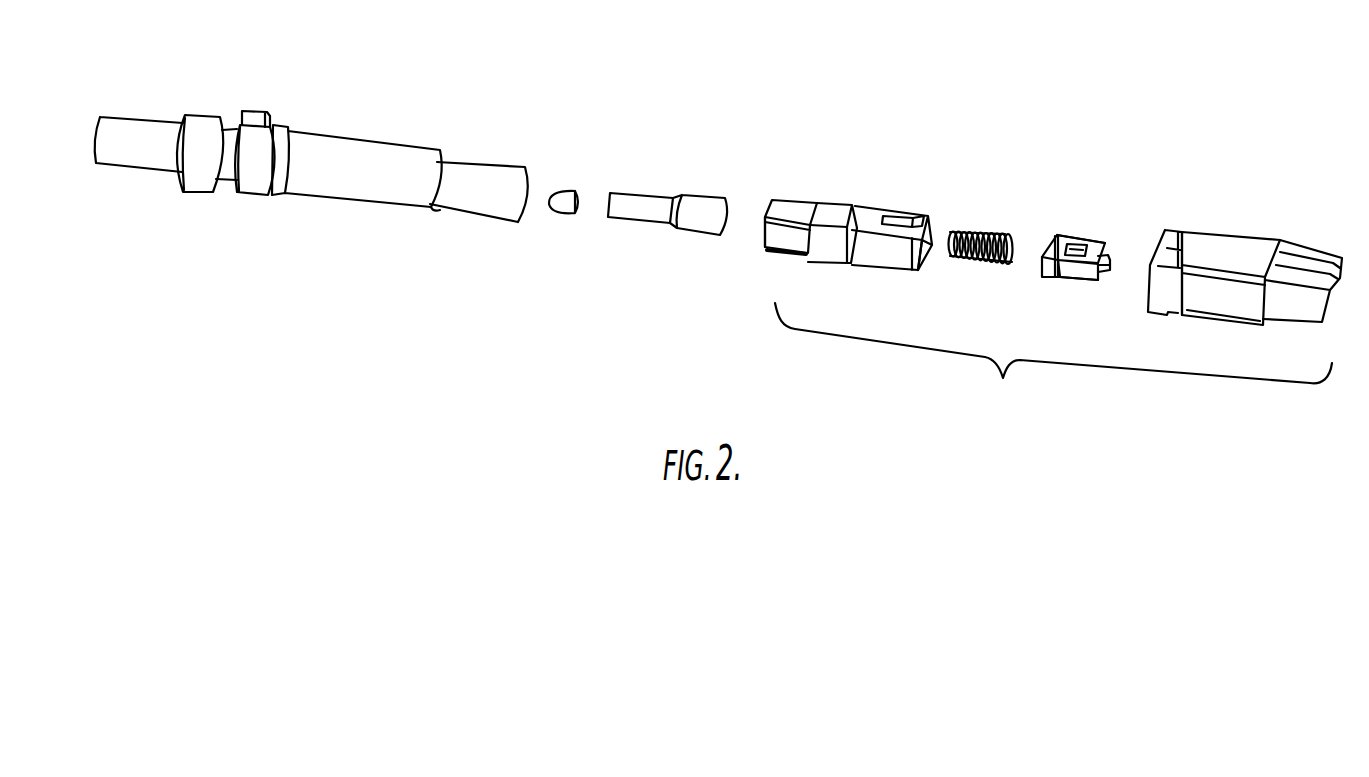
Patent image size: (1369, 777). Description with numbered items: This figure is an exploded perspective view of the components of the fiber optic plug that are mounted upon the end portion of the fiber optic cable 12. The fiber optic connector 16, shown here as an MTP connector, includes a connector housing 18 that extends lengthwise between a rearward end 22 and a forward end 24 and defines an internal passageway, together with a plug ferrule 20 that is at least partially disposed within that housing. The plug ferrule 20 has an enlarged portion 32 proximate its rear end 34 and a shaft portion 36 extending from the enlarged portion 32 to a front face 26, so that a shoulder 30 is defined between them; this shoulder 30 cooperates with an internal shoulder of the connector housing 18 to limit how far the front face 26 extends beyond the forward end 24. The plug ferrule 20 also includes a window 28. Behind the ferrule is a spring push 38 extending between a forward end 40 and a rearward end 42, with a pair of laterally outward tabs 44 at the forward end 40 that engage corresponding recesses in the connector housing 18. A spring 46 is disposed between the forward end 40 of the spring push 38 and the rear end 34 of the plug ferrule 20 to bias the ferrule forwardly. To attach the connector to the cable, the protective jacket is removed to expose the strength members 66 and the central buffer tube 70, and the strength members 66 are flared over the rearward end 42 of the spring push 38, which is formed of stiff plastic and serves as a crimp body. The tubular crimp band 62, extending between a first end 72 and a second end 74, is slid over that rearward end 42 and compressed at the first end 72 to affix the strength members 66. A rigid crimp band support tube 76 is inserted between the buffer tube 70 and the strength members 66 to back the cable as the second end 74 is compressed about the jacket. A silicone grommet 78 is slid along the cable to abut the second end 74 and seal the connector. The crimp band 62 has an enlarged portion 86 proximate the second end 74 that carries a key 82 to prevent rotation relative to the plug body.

The fiber optic cable 12 is at (138, 128).
The fiber optic connector 16 is at (1053, 362).
The connector housing 18 is at (1228, 308).
The plug ferrule 20 is at (1119, 176).
The rearward end 22 is at (1165, 227).
The forward end 24 is at (1338, 260).
The front face 26 is at (1105, 272).
The window 28 is at (1080, 247).
The shoulder 30 is at (1058, 276).
The enlarged portion 32 is at (1057, 247).
The rear end 34 is at (1050, 243).
The shaft portion 36 is at (1077, 272).
The spring push 38 is at (856, 172).
The forward end 40 is at (925, 265).
The rearward end 42 is at (763, 238).
The tabs 44 is at (925, 217).
The spring 46 is at (972, 232).
The crimp band 62 is at (357, 143).
The strength members 66 is at (490, 170).
The buffer tube 70 is at (648, 193).
The first end 72 is at (433, 207).
The second end 74 is at (223, 183).
The crimp band support tube 76 is at (565, 190).
The grommet 78 is at (197, 123).
The key 82 is at (262, 120).
The enlarged portion 86 is at (261, 187).